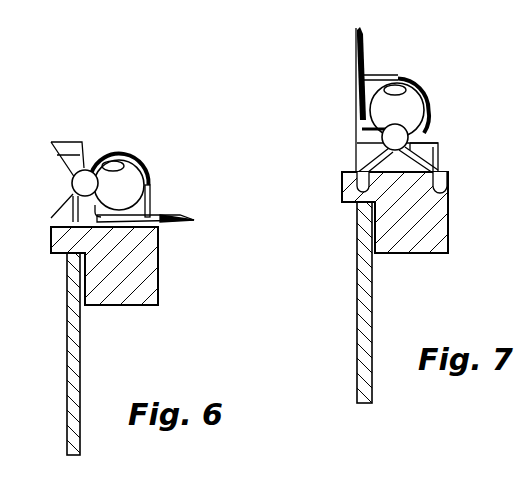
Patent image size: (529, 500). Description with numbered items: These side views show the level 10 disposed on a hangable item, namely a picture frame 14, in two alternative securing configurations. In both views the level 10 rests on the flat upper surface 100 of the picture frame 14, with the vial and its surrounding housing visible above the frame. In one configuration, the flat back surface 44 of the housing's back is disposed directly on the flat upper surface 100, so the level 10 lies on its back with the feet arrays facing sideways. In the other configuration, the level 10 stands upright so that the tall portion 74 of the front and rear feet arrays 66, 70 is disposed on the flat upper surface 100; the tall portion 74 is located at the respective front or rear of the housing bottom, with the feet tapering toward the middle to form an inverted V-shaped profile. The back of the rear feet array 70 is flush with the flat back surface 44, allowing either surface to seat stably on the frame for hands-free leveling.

In FIG. 6, the level 10 is at (118, 132).
In FIG. 7, the level 10 is at (406, 58).
In FIG. 6, the picture frame 14 is at (118, 290).
In FIG. 7, the picture frame 14 is at (403, 235).
In FIG. 6, the flat back surface 44 is at (170, 228).
In FIG. 7, the front feet array 66 is at (455, 167).
In FIG. 7, the rear feet array 70 is at (353, 168).
In FIG. 7, the tall portion 74 is at (340, 190).
In FIG. 6, the flat upper surface 100 is at (120, 227).
In FIG. 7, the flat upper surface 100 is at (395, 173).